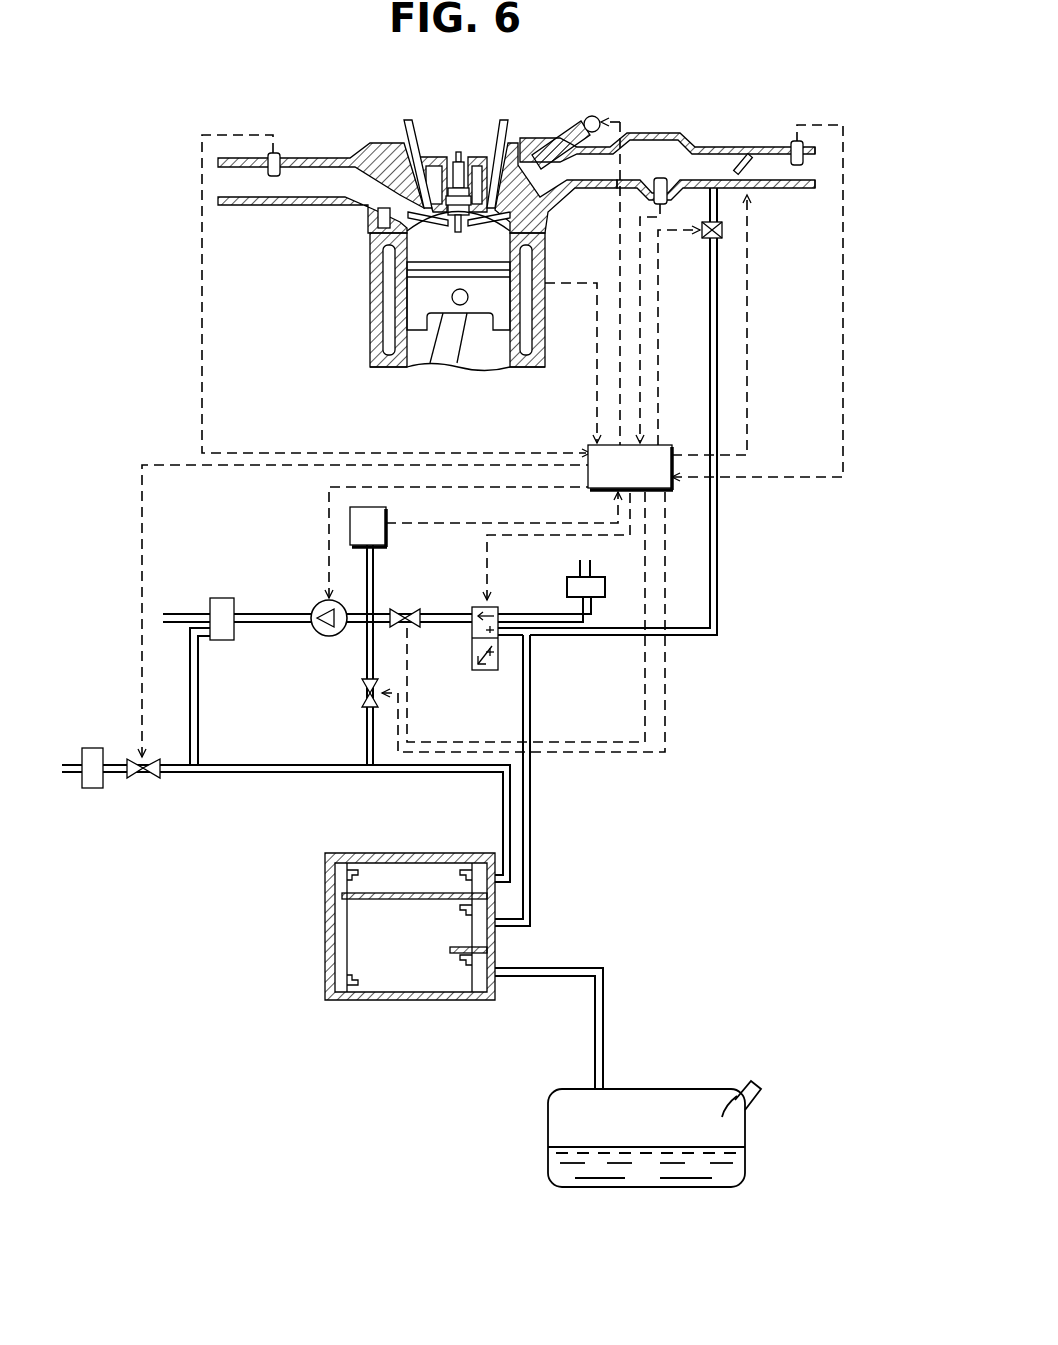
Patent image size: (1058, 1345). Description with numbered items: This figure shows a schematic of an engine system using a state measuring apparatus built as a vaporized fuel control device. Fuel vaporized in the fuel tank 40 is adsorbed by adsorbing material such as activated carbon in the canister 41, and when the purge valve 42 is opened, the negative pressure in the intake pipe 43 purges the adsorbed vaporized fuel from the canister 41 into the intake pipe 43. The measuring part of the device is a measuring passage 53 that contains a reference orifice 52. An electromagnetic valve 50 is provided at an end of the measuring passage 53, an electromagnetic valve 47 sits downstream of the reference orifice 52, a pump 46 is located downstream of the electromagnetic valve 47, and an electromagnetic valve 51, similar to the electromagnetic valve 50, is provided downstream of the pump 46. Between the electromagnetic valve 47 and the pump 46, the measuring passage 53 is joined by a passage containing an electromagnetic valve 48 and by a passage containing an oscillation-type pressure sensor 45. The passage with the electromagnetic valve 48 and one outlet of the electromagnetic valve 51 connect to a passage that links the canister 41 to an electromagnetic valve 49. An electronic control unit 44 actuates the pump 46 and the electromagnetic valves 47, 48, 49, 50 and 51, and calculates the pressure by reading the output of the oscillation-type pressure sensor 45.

The fuel tank 40 is at (666, 1090).
The canister 41 is at (398, 1002).
The purge valve 42 is at (722, 231).
The intake pipe 43 is at (741, 146).
The electronic control unit (ECU) 44 is at (592, 445).
The oscillation-type pressure sensor 45 is at (388, 526).
The pump 46 is at (325, 634).
The electromagnetic valve 47 is at (407, 611).
The electromagnetic valve 48 is at (360, 694).
The electromagnetic valve 49 is at (149, 781).
The electromagnetic valve 50 is at (486, 671).
The electromagnetic valve 51 is at (222, 598).
The reference orifice 52 is at (432, 625).
The measuring passage 53 is at (381, 625).